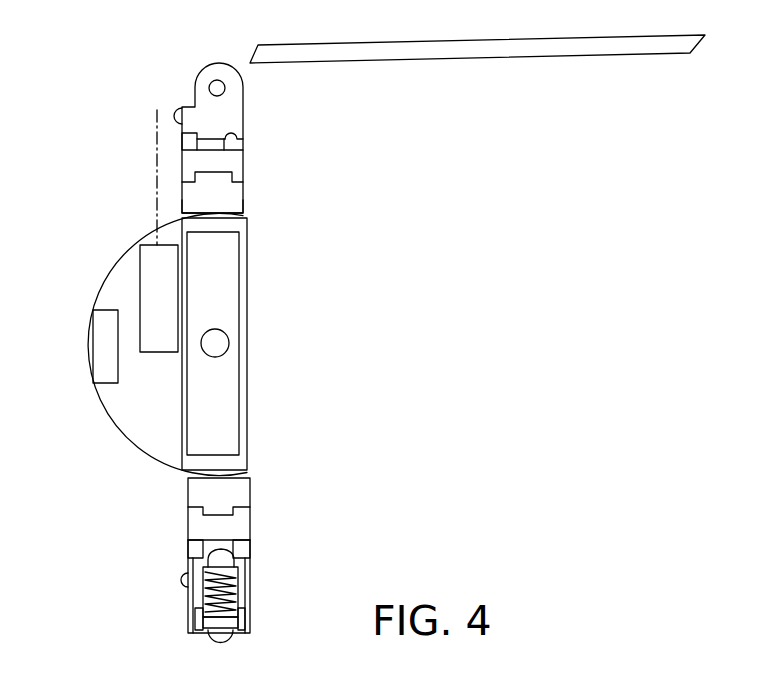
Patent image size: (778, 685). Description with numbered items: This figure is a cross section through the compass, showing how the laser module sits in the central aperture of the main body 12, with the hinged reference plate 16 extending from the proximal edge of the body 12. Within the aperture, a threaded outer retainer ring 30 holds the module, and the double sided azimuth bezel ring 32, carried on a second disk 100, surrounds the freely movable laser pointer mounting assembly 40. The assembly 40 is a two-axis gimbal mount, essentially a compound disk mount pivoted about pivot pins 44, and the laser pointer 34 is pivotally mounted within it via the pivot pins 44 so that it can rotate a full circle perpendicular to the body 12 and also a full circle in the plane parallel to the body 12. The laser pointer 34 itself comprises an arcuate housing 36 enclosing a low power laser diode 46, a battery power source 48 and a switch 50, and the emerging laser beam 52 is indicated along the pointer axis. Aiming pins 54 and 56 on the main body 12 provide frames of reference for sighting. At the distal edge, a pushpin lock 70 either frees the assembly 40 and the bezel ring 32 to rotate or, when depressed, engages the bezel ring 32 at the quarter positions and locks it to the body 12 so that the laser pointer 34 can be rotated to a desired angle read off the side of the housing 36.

The main body 12 is at (243, 105).
The hinged reference plate 16 is at (415, 62).
The threaded outer retainer ring 30 is at (182, 140).
The azimuth bezel ring 32 is at (243, 165).
The laser pointer 34 is at (118, 435).
The arcuate housing 36 is at (248, 418).
The laser pointer mounting assembly 40 is at (243, 207).
The pivot pins 44 is at (228, 343).
The laser diode 46 is at (140, 302).
The battery power source 48 is at (247, 263).
The switch 50 is at (118, 343).
The laser beam 52 is at (157, 180).
The aiming pin 54 is at (174, 110).
The aiming pin 56 is at (183, 585).
The pushpin lock 70 is at (233, 640).
The second disk 100 is at (243, 138).